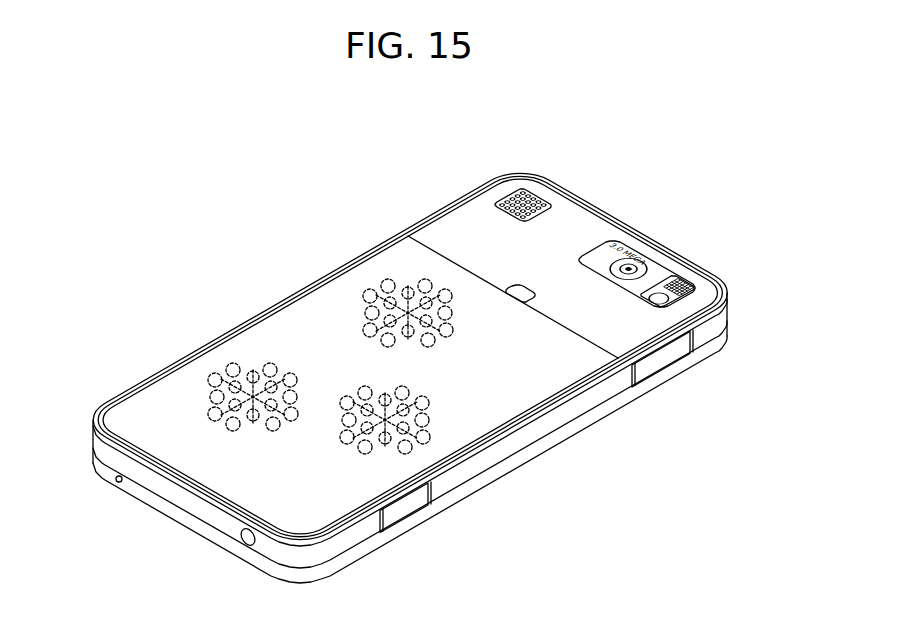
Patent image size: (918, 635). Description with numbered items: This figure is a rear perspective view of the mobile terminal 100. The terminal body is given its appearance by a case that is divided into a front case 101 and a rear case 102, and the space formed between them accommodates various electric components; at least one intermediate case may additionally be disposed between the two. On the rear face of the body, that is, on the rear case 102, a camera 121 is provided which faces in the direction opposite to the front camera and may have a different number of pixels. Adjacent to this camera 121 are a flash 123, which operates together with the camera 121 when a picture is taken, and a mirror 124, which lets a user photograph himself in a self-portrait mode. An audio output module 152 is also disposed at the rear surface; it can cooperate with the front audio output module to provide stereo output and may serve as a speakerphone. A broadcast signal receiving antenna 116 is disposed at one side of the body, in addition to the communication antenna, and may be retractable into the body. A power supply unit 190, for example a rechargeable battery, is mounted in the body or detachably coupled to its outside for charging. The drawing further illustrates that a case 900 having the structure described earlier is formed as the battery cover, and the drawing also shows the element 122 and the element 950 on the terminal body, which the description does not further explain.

The mobile terminal 100 is at (372, 222).
The front case 101 is at (723, 340).
The rear case 102 is at (723, 317).
The broadcast signal receiving antenna 116 is at (248, 539).
The camera 121 is at (636, 262).
The microphone 122 is at (117, 481).
The flash 123 is at (697, 287).
The mirror 124 is at (662, 290).
The audio output module 152 is at (540, 198).
The power supply unit 190 is at (325, 305).
The case 900 is at (203, 372).
The haptic center 950 is at (250, 372).